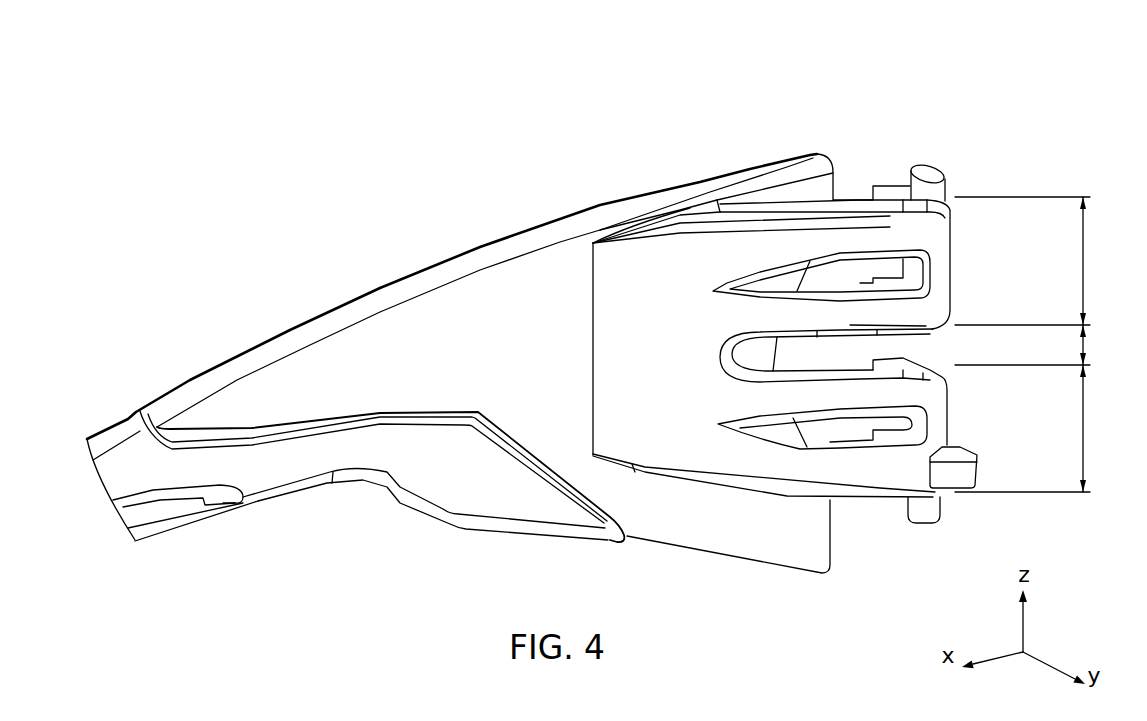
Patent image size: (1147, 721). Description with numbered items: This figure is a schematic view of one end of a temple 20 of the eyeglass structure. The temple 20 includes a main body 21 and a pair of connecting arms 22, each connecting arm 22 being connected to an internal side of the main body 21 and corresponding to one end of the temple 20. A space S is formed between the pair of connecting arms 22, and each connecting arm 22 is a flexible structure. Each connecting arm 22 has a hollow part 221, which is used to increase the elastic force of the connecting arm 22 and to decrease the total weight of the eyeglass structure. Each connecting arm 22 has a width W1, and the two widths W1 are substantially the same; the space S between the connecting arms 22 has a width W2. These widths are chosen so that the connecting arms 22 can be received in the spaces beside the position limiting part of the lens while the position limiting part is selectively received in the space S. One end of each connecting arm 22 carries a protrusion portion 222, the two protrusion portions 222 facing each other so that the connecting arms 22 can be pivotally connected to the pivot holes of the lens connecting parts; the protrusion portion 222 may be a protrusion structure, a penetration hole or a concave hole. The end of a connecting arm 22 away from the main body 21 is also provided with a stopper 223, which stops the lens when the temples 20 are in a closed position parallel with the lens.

The temple 20 is at (244, 86).
The main body 21 is at (527, 284).
The connecting arm 22 is at (757, 247).
The hollow part 221 is at (850, 253).
The protrusion portion 222 is at (955, 180).
The stopper 223 is at (968, 470).
The space S is at (1000, 340).
The width of connecting arm W1 is at (1038, 344).
The width of space W2 is at (1041, 345).